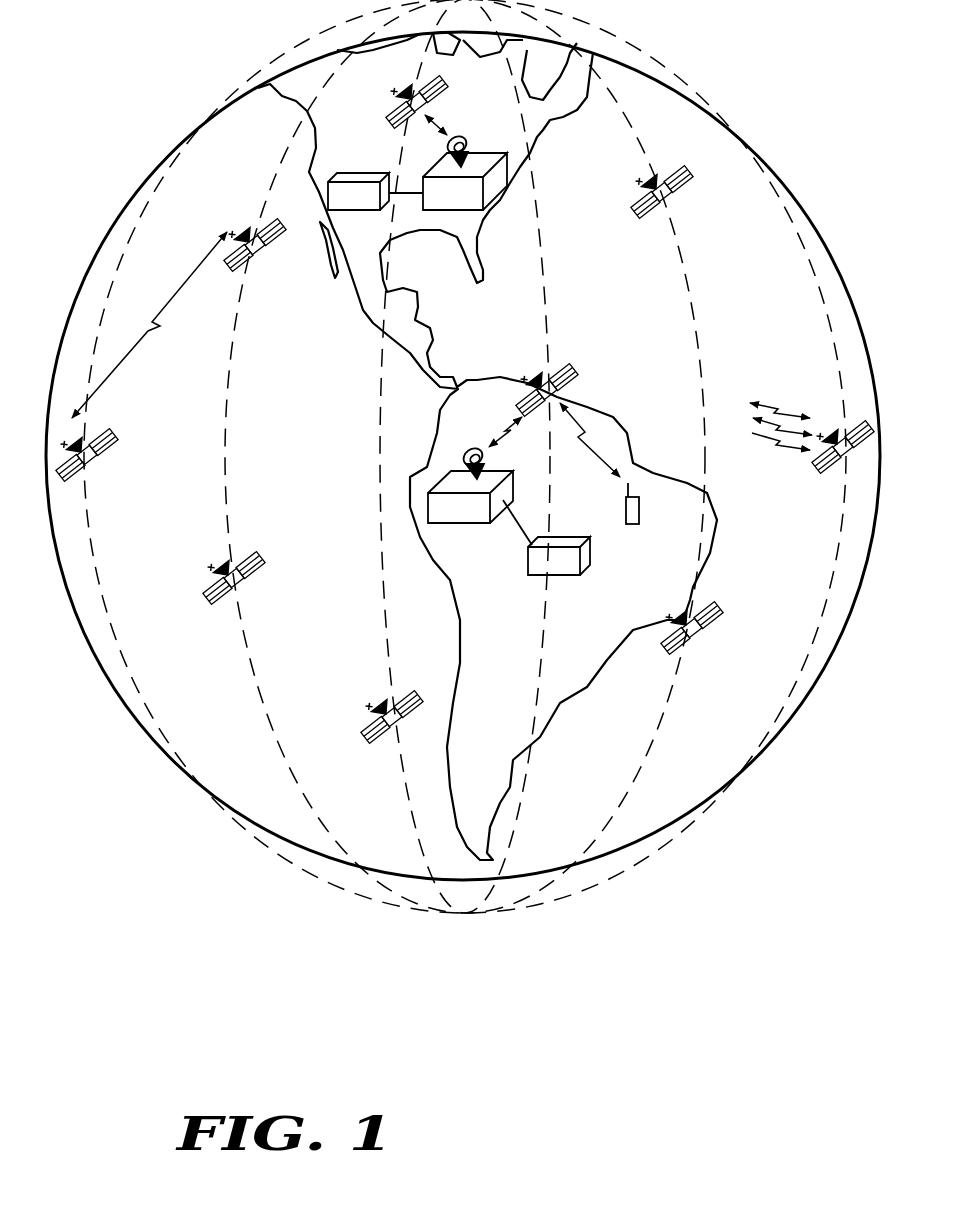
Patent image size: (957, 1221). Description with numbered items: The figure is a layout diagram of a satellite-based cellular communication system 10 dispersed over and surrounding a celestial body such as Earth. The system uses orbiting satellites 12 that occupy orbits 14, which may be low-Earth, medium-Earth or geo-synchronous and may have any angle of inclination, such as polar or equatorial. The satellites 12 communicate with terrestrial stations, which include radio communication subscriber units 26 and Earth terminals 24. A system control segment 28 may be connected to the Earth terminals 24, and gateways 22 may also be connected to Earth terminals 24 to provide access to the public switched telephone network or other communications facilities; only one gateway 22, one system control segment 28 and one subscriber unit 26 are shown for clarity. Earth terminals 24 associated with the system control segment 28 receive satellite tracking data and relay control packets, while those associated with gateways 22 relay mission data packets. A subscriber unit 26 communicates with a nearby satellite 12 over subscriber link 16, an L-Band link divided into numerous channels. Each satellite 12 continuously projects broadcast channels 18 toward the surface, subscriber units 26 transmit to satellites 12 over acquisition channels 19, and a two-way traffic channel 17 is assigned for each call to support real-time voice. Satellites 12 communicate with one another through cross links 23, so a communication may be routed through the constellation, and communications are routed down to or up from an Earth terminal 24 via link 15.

The communication system 10 is at (457, 1010).
The satellite 12 is at (395, 125).
The orbit 14 is at (284, 164).
The link 15 is at (443, 121).
The subscriber link 16 is at (587, 422).
The traffic channel 17 is at (778, 404).
The broadcast channel 18 is at (761, 415).
The acquisition channel 19 is at (770, 438).
The gateway 22 is at (563, 577).
The cross link 23 is at (160, 326).
The Earth terminal 24 is at (487, 153).
The subscriber unit 26 is at (630, 527).
The system control segment 28 is at (343, 213).